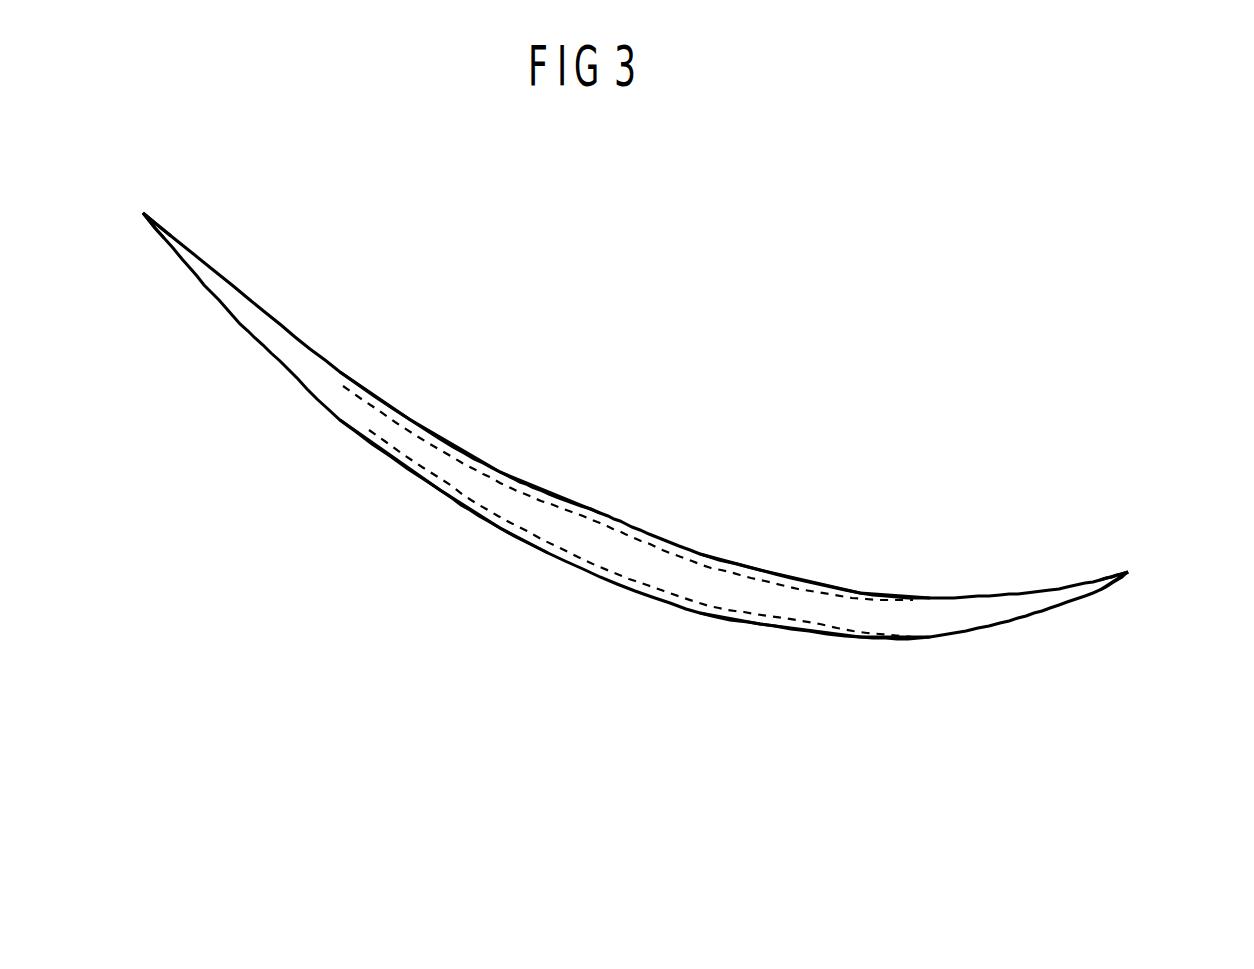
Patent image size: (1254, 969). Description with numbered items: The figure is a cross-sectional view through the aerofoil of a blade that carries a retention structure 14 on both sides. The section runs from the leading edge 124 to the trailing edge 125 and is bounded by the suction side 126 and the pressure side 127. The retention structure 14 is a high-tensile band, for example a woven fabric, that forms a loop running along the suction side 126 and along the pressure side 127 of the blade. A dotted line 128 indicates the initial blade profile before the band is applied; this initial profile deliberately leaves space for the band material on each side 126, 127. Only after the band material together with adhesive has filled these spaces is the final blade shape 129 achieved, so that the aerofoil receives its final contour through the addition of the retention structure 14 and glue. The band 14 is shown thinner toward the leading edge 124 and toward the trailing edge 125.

The retention structure 14 is at (662, 545).
The leading edge 124 is at (143, 212).
The trailing edge 125 is at (1132, 573).
The suction side 126 is at (721, 640).
The pressure side 127 is at (768, 557).
The dotted line indicating initial blade profile 128 is at (613, 528).
The final blade shape 129 is at (508, 477).